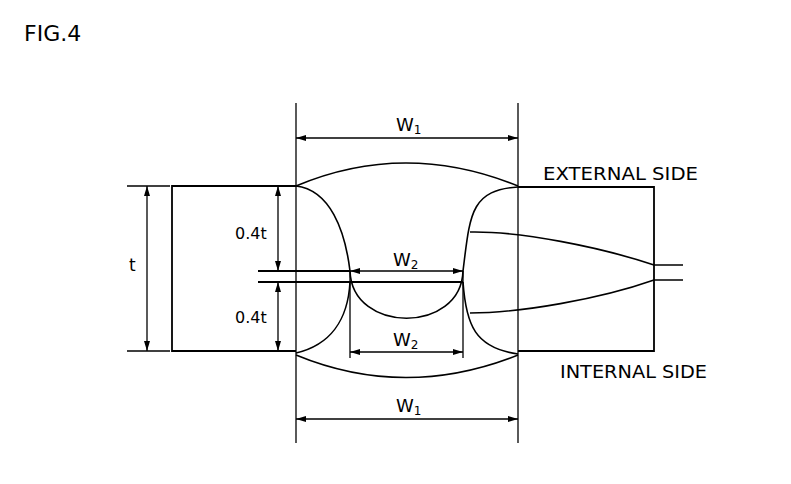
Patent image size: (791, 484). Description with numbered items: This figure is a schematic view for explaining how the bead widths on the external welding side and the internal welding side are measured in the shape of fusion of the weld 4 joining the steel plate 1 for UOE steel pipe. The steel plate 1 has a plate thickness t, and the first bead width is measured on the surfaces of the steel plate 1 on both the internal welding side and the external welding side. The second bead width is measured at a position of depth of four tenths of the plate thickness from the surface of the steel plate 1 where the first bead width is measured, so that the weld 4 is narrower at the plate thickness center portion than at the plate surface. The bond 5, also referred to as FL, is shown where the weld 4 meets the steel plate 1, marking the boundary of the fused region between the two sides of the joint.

The steel plate for UOE steel pipe 1 is at (203, 206).
The weld 4 is at (473, 196).
The bond 5 is at (586, 272).